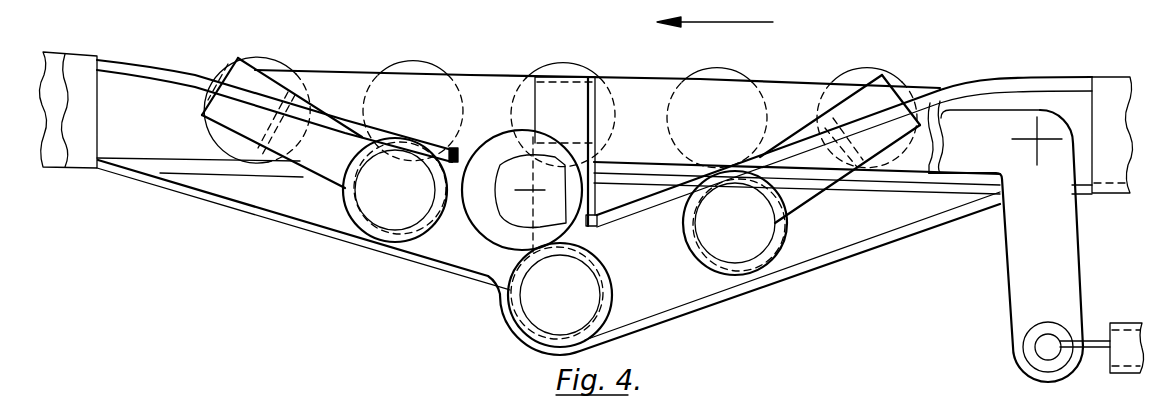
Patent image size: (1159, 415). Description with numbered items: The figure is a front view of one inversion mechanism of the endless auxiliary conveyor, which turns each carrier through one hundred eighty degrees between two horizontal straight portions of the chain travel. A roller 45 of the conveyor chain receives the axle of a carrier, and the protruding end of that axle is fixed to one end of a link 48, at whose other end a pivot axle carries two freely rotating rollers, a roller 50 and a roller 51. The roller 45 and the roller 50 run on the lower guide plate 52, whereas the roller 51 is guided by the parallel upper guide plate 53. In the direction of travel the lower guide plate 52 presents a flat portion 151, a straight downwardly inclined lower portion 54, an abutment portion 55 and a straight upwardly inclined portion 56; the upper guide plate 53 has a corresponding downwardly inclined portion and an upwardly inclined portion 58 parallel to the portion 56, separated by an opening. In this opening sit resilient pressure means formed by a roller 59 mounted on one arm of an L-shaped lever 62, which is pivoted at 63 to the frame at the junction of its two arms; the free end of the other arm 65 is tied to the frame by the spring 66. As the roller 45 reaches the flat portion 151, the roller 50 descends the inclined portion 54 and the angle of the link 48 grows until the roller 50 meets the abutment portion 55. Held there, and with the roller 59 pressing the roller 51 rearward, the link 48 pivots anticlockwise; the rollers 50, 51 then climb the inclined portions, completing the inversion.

The roller 45 is at (866, 68).
The link 48 is at (829, 188).
The roller 50 is at (694, 257).
The roller 51 is at (773, 231).
The lower guide plate 52 is at (1077, 195).
The upper guide plate 53 is at (1065, 77).
The straight downwardly inclined lower portion 54 is at (681, 314).
The abutment portion 55 is at (503, 315).
The straight upwardly inclined portion 56 is at (249, 207).
The upwardly inclined portion 58 is at (127, 47).
The roller 59 is at (470, 209).
The L-shaped lever 62 is at (1050, 276).
The pivot 63 is at (1034, 139).
The arm 65 is at (1080, 260).
The spring 66 is at (1131, 319).
The flat portion 151 is at (903, 186).